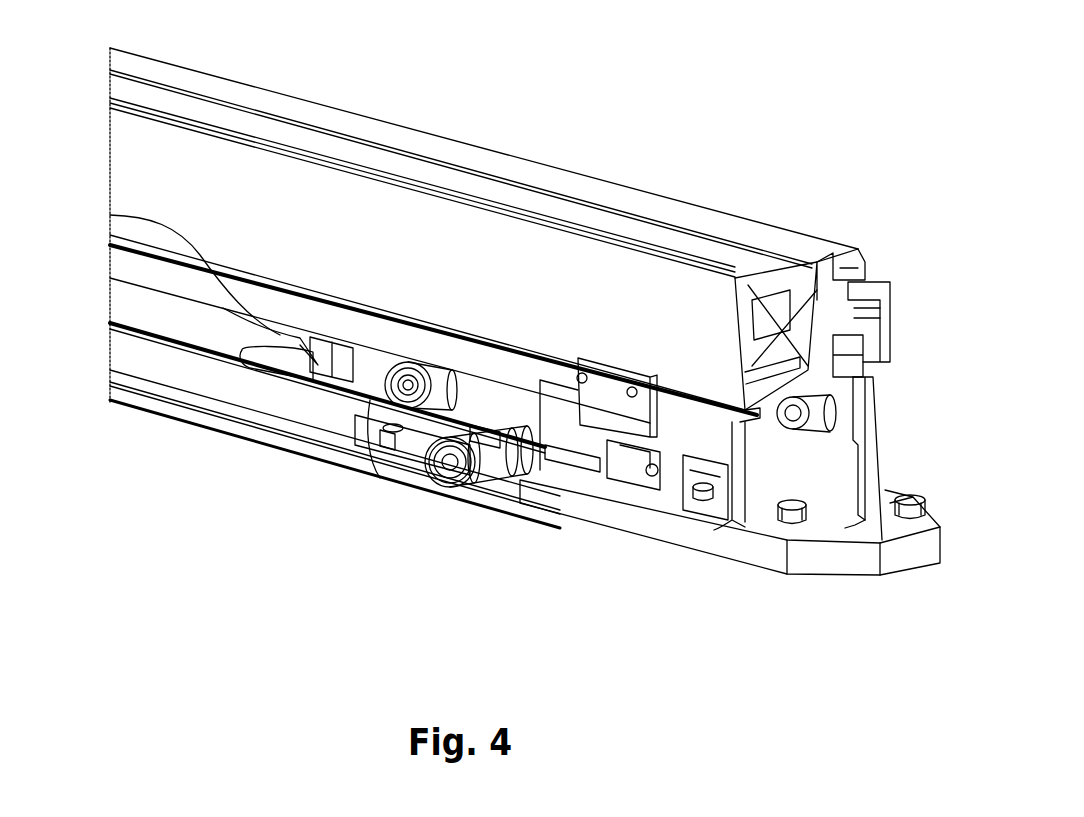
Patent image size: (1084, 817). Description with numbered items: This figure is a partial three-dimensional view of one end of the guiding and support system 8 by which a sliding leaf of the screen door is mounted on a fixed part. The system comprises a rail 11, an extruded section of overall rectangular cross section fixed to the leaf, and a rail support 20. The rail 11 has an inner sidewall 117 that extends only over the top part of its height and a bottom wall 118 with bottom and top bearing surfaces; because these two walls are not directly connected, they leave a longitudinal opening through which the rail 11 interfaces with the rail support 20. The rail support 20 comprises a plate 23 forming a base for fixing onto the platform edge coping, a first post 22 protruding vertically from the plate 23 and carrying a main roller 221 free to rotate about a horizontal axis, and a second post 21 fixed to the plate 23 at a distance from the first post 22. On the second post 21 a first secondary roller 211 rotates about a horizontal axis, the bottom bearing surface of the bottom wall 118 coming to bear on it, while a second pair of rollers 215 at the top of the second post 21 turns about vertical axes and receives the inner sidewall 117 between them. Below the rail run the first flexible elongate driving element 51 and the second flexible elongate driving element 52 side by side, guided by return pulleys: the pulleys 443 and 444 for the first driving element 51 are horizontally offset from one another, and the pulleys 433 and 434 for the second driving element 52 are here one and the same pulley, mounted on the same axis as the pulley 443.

The guiding and support system 8 is at (573, 132).
The rail 11 is at (418, 145).
The inner sidewall 117 is at (822, 261).
The second pair of rollers 215 is at (885, 308).
The bottom wall 118 is at (834, 362).
The first secondary roller 211 is at (822, 427).
The second post 21 is at (873, 462).
The plate 23 is at (702, 542).
The rail support 20 is at (618, 540).
The first post 22 is at (241, 357).
The second flexible elongate driving element 52 is at (162, 342).
The first flexible elongate driving element 51 is at (189, 395).
The main roller 221 is at (110, 215).
The return pulley 444 is at (380, 460).
The return pulley 443 is at (510, 484).
The return pulley 433 is at (402, 488).
The return pulley 434 is at (535, 448).